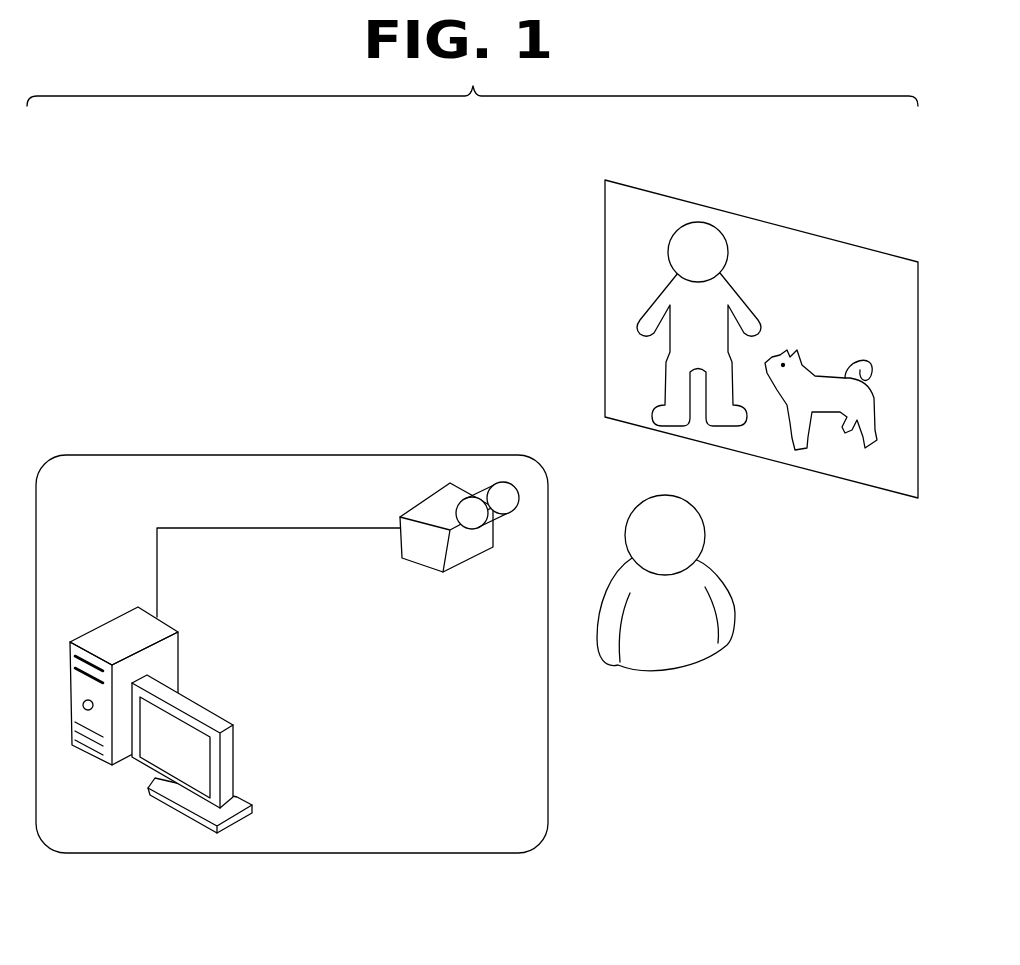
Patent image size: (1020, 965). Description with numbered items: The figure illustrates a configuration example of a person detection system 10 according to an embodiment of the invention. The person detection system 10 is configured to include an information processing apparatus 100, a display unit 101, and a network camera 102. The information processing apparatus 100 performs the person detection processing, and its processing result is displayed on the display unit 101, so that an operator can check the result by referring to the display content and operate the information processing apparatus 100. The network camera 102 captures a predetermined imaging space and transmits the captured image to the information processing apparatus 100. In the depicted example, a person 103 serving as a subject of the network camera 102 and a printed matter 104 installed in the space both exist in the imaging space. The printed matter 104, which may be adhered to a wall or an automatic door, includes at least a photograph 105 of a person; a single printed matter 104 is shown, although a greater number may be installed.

The person detection system 10 is at (117, 455).
The information processing apparatus 100 is at (107, 632).
The display unit 101 is at (227, 763).
The network camera 102 is at (407, 540).
The person 103 is at (716, 585).
The printed matter 104 is at (795, 232).
The photograph 105 is at (772, 288).